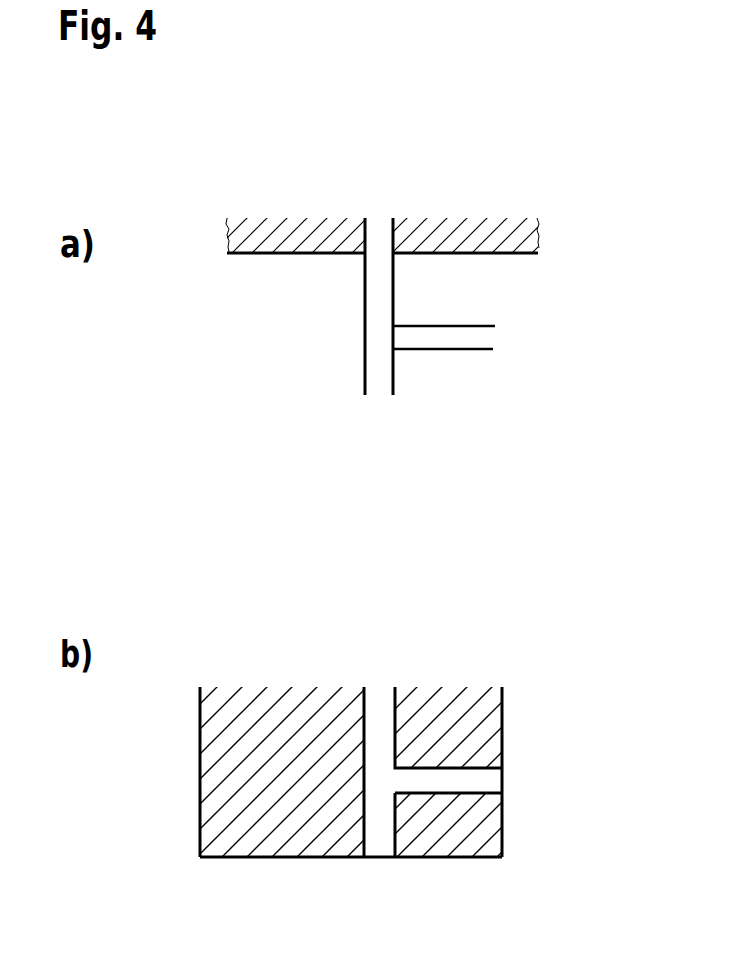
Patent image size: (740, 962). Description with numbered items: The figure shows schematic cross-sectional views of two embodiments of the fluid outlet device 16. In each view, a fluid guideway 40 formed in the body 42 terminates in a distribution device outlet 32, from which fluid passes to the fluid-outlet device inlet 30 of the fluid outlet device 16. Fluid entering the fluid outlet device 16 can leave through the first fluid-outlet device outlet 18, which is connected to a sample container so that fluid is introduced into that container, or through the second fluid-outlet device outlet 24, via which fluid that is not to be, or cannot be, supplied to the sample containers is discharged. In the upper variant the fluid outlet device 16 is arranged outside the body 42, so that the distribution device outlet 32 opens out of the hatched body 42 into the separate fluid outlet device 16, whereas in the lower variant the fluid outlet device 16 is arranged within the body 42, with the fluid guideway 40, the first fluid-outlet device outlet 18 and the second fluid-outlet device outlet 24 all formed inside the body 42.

The fluid outlet device 16 is at (318, 349).
The first fluid-outlet device outlet 18 is at (395, 375).
The second fluid-outlet device outlet 24 is at (477, 350).
The fluid-outlet device inlet 30 is at (396, 257).
The distribution device outlet 32 is at (380, 252).
The fluid guideway 40 is at (382, 225).
The body 42 is at (537, 243).